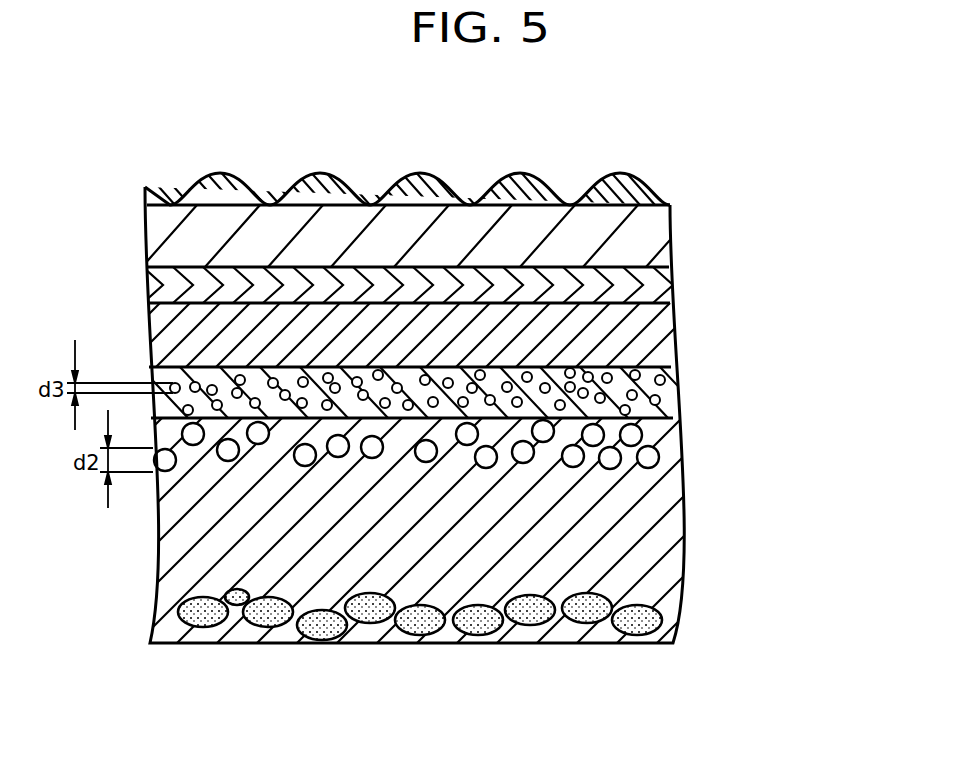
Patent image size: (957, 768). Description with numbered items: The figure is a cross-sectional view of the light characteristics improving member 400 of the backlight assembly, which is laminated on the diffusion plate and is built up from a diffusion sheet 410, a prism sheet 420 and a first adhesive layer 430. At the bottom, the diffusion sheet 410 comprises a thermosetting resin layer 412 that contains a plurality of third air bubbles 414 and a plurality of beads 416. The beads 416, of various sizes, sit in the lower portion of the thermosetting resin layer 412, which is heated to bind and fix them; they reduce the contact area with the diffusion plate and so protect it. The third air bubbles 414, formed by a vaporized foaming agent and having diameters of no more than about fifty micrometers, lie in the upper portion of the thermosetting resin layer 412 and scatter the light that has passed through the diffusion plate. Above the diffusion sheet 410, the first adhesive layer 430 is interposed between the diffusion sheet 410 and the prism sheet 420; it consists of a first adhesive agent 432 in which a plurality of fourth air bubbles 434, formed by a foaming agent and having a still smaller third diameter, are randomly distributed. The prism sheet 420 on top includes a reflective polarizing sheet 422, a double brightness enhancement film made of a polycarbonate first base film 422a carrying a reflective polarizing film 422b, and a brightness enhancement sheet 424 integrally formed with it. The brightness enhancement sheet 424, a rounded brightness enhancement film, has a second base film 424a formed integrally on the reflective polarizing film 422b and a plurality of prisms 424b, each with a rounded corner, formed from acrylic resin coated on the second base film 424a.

The light characteristics improving member 400 is at (462, 112).
The diffusion sheet 410 is at (441, 530).
The thermosetting resin layer 412 is at (665, 522).
The third air bubbles 414 is at (643, 438).
The beads 416 is at (475, 614).
The prism sheet 420 is at (478, 263).
The reflective polarizing sheet 422 is at (455, 317).
The first base film 422a is at (663, 329).
The reflective polarizing film 422b is at (660, 284).
The brightness enhancement sheet 424 is at (447, 213).
The second base film 424a is at (663, 228).
The prisms 424b is at (655, 178).
The first adhesive layer 430 is at (491, 386).
The first adhesive agent 432 is at (660, 394).
The fourth air bubbles 434 is at (668, 379).